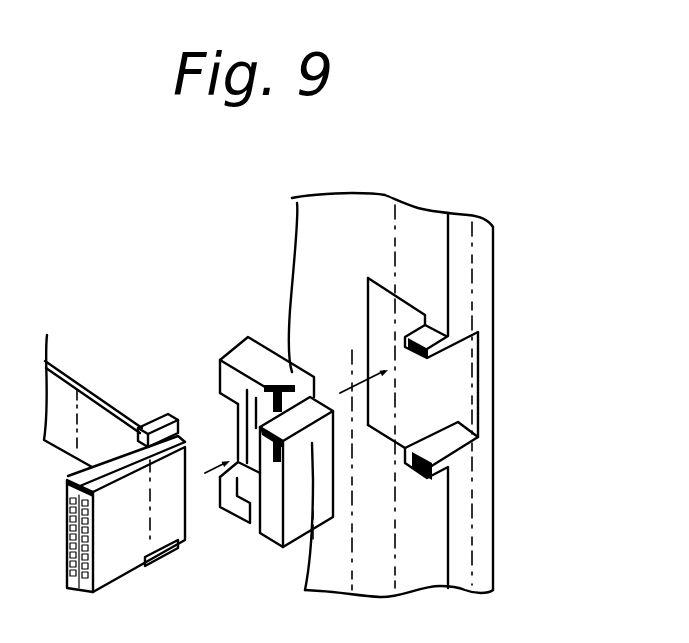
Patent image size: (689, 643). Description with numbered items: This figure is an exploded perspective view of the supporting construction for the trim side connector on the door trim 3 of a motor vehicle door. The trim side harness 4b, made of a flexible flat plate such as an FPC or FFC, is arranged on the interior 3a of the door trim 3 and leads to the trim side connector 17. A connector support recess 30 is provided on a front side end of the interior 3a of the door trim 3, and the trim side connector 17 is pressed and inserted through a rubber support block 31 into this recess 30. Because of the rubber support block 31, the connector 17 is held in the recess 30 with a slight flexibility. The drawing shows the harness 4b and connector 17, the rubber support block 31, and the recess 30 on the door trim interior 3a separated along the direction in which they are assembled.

The door trim 3 is at (498, 321).
The interior of the door trim 3a is at (305, 252).
The connector support recess 30 is at (448, 343).
The rubber support block 31 is at (312, 430).
The trim side harness 4b is at (100, 415).
The trim side connector 17 is at (173, 523).